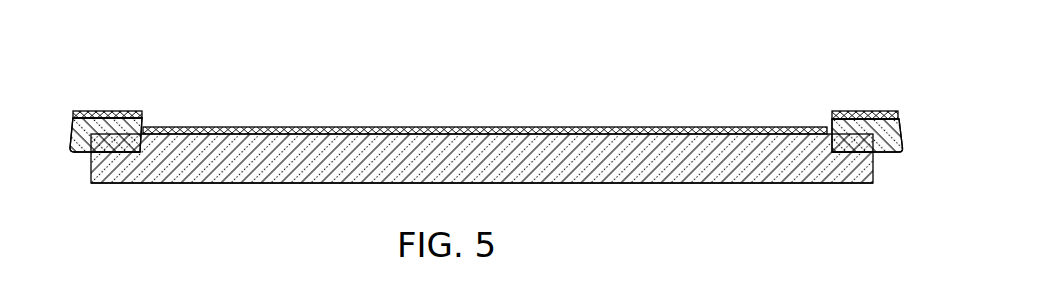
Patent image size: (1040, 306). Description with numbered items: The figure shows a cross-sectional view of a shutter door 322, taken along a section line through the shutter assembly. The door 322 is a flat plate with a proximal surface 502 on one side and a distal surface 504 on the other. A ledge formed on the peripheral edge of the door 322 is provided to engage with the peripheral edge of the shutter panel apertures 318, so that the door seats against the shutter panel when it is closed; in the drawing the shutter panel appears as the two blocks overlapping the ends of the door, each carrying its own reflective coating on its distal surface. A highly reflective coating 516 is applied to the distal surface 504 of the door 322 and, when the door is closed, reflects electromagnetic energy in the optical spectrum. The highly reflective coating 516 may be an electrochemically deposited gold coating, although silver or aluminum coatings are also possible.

The shutter panel apertures 318 is at (233, 62).
The distal surface 504 is at (370, 97).
The proximal surface 502 is at (641, 214).
The door 322 is at (612, 168).
The highly reflective coating 516 is at (510, 127).